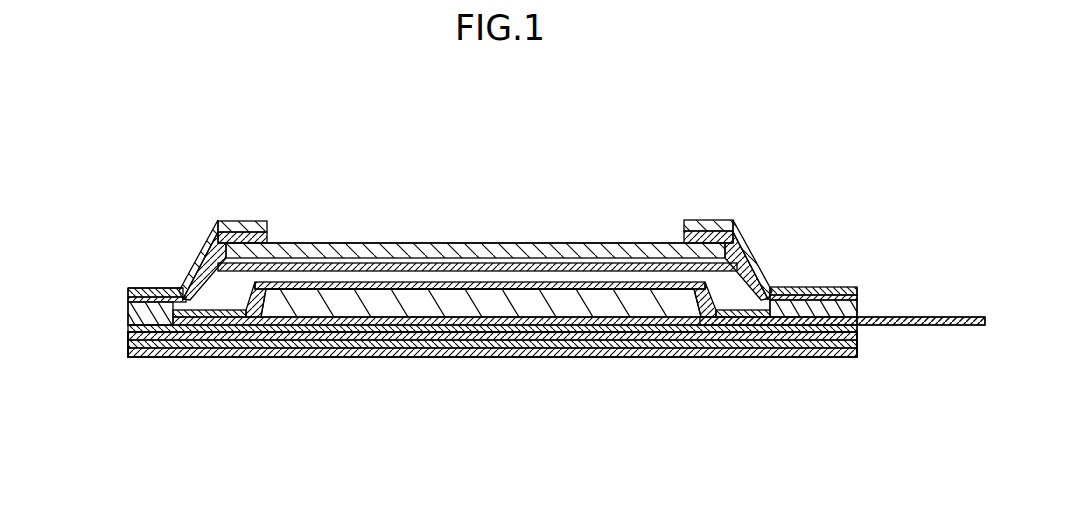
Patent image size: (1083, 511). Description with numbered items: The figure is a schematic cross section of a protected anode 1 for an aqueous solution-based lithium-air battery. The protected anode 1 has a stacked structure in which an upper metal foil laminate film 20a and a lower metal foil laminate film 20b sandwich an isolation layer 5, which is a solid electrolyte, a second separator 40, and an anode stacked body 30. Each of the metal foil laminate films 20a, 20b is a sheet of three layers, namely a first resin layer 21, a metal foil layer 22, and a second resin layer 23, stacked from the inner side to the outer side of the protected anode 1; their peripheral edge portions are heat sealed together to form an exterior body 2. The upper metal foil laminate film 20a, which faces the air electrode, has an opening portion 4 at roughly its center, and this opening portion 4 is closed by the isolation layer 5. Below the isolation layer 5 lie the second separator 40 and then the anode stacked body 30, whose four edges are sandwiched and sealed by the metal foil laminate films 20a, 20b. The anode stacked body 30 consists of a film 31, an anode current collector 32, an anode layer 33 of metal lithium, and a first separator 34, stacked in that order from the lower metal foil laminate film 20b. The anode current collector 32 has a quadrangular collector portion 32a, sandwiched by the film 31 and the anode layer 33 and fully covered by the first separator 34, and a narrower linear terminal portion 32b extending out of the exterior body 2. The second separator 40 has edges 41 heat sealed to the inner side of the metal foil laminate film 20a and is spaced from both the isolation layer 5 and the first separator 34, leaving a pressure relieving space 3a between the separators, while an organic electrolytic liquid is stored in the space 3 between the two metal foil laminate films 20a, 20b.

The protected anode 1 is at (830, 182).
The exterior body 2 is at (806, 360).
The space 3 is at (625, 243).
The pressure relieving space 3a is at (600, 331).
The opening portion 4 is at (688, 233).
The isolation layer 5 is at (305, 262).
The metal foil laminate film 20a is at (203, 182).
The metal foil laminate film 20b is at (260, 442).
The first resin layer 21 is at (127, 315).
The metal foil layer 22 is at (150, 298).
The second resin layer 23 is at (178, 293).
The anode stacked body 30 is at (575, 153).
The film 31 is at (508, 329).
The anode current collector 32 is at (553, 317).
The collector portion 32a is at (697, 323).
The terminal portion 32b is at (918, 317).
The anode layer 33 is at (410, 303).
The first separator 34 is at (456, 288).
The second separator 40 is at (368, 282).
The edges 41 is at (203, 236).